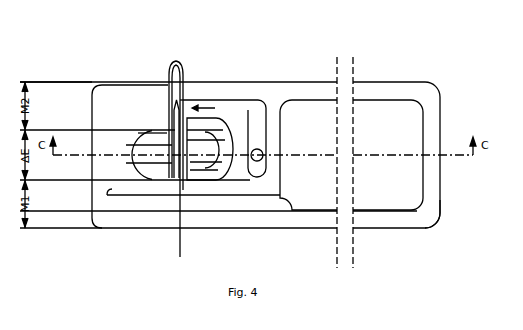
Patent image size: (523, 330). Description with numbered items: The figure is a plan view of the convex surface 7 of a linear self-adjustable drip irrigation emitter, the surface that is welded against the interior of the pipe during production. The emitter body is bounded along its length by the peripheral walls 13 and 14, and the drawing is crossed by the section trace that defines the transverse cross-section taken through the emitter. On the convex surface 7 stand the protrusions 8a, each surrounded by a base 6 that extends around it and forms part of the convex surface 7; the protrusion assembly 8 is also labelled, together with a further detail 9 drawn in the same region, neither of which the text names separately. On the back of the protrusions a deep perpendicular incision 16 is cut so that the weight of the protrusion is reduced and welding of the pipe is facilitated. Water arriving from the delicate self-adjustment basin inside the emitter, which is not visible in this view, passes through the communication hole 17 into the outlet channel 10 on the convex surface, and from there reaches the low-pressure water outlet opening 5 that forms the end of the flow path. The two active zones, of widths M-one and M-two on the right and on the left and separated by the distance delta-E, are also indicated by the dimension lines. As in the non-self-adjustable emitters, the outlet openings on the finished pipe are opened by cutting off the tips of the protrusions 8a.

The water outlet opening 5 is at (178, 173).
The base 6 is at (117, 175).
The convex surface 7 is at (97, 195).
The clip 8 is at (180, 62).
The protrusion 8a is at (183, 64).
The pin 9 is at (163, 140).
The outlet channel 10 is at (240, 110).
The peripheral wall 13 is at (392, 90).
The peripheral wall 14 is at (433, 228).
The perpendicular incision 16 is at (147, 157).
The communication hole 17 is at (263, 160).